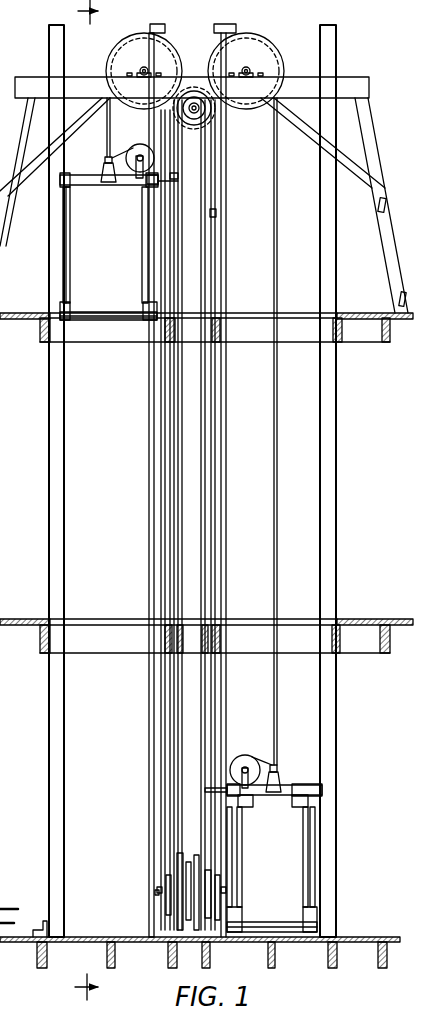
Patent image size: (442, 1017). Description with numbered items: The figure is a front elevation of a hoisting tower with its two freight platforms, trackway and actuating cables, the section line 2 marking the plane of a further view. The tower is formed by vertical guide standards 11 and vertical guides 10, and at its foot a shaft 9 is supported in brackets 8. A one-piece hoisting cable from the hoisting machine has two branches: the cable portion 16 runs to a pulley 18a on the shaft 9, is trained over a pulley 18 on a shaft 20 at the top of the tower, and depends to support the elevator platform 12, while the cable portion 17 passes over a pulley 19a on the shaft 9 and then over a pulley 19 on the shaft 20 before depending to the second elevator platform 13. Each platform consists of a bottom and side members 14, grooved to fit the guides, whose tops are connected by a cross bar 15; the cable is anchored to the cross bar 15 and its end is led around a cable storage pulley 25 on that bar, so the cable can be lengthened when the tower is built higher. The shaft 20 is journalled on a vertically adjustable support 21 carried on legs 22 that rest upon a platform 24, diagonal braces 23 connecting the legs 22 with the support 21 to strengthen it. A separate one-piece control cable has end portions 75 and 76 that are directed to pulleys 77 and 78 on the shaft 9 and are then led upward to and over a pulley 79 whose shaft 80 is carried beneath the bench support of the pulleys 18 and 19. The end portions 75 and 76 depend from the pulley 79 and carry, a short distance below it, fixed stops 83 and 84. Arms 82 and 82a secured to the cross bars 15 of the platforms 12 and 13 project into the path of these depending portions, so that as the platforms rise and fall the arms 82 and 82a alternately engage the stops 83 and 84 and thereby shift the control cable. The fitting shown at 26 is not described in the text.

The section line 2 is at (80, 500).
The brackets 8 is at (175, 933).
The shaft 9 is at (155, 892).
The vertical guides 10 is at (225, 493).
The vertical guide standards 11 is at (150, 482).
The elevator platform 12 is at (120, 320).
The second elevator platform 13 is at (288, 932).
The side members 14 is at (85, 250).
The cross bar 15 is at (125, 185).
The cable portion 16 is at (182, 531).
The cable portion 17 is at (277, 586).
The pulley 18 is at (140, 45).
The pulley 18a is at (177, 863).
The pulley 19 is at (262, 52).
The pulley 19a is at (203, 860).
The shaft 20 is at (147, 69).
The vertically adjustable support 21 is at (40, 84).
The legs 22 is at (382, 223).
The diagonal braces 23 is at (43, 152).
The platform 24 is at (20, 318).
The cable storage pulley 25 is at (138, 155).
The rope hitch 26 is at (105, 158).
The control cable end 75 is at (177, 273).
The control cable end 76 is at (213, 275).
The pulley 77 is at (166, 878).
The pulley 78 is at (226, 890).
The pulley 79 is at (195, 96).
The shaft 80 is at (194, 113).
The arm 82 is at (160, 183).
The arm 82a is at (205, 793).
The stop 83 is at (177, 176).
The stop 84 is at (216, 214).